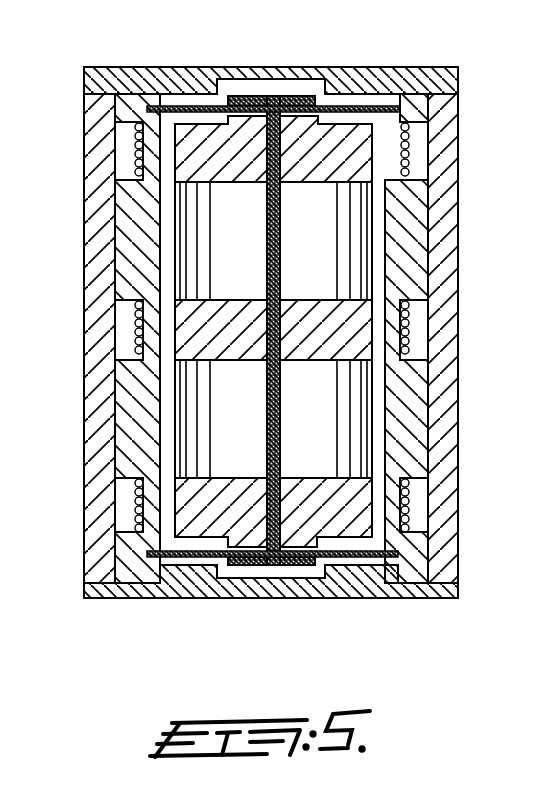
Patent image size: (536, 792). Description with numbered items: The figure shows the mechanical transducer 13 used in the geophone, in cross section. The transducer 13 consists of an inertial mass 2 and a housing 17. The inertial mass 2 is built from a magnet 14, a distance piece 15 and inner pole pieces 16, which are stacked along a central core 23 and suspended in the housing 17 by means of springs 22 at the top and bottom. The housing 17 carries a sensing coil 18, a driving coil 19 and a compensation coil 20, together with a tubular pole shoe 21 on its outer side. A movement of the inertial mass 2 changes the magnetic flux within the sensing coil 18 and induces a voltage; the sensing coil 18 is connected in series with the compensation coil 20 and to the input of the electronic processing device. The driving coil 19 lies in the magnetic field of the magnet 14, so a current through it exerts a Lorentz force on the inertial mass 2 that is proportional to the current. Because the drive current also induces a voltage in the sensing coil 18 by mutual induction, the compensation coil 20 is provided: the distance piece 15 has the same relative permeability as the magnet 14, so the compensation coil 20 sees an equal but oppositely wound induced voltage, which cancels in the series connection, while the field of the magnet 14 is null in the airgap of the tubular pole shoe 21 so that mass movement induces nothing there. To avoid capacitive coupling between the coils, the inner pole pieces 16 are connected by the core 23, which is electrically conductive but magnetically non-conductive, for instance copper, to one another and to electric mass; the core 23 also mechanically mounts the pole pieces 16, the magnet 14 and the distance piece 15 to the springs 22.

The inertial mass 2 is at (160, 419).
The mechanical transducer 13 is at (176, 82).
The magnet 14 is at (192, 242).
The distance piece 15 is at (196, 456).
The inner pole pieces 16 is at (348, 154).
The housing 17 is at (417, 252).
The sensing coil 18 is at (132, 143).
The driving coil 19 is at (132, 332).
The compensation coil 20 is at (143, 505).
The tubular pole shoe 21 is at (440, 430).
The springs 22 is at (318, 94).
The core 23 is at (282, 400).